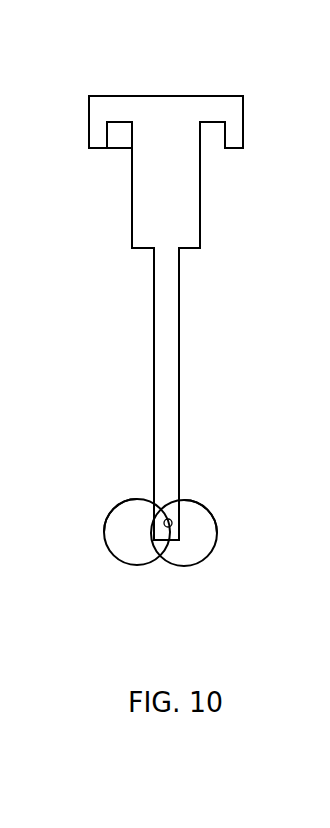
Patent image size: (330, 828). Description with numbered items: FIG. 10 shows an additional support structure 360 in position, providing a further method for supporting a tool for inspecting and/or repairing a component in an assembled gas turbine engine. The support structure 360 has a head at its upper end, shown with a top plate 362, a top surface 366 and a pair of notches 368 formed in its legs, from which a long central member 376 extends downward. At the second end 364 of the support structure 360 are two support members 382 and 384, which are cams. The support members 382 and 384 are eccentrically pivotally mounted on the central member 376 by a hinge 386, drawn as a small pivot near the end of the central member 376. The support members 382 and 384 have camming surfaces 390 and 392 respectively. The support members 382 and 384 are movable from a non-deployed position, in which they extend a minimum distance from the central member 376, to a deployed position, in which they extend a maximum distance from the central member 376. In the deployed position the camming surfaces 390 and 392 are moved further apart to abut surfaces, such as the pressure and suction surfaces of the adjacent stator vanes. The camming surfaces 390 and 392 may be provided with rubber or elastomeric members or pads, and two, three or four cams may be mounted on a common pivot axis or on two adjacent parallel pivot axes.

The support structure 360 is at (202, 220).
The head 362 is at (213, 96).
The top surface of head 366 is at (118, 96).
The notches 368 is at (93, 148).
The central member 376 is at (173, 330).
The second end 364 is at (171, 490).
The support member 382 is at (125, 555).
The support member 384 is at (190, 553).
The hinge 386 is at (167, 528).
The camming surface 390 is at (104, 541).
The camming surface 392 is at (218, 537).